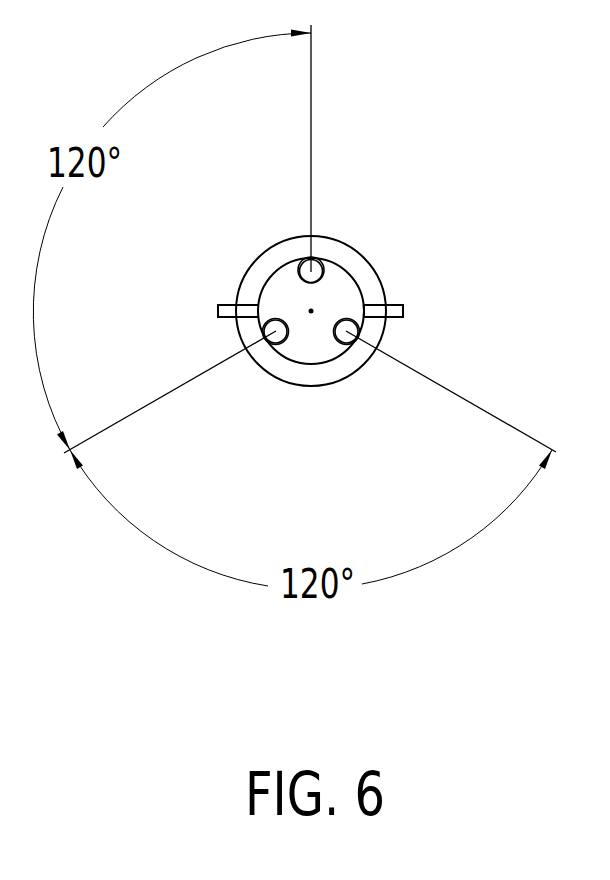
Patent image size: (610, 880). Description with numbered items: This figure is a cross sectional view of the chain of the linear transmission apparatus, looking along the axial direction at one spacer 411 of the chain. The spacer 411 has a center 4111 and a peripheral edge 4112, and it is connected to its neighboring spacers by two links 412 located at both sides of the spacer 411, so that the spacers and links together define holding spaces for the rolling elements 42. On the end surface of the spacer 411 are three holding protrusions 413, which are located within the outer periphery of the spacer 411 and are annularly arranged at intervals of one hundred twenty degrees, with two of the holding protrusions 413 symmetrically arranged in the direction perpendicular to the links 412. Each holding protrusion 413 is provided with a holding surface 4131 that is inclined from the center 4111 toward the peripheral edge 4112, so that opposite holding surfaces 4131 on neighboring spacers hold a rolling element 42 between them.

The rolling element 42 is at (381, 275).
The spacer 411 is at (278, 290).
The center 4111 is at (311, 313).
The peripheral edge 4112 is at (364, 317).
The link 412 is at (401, 311).
The holding protrusion 413 is at (302, 261).
The holding surface 4131 is at (313, 275).